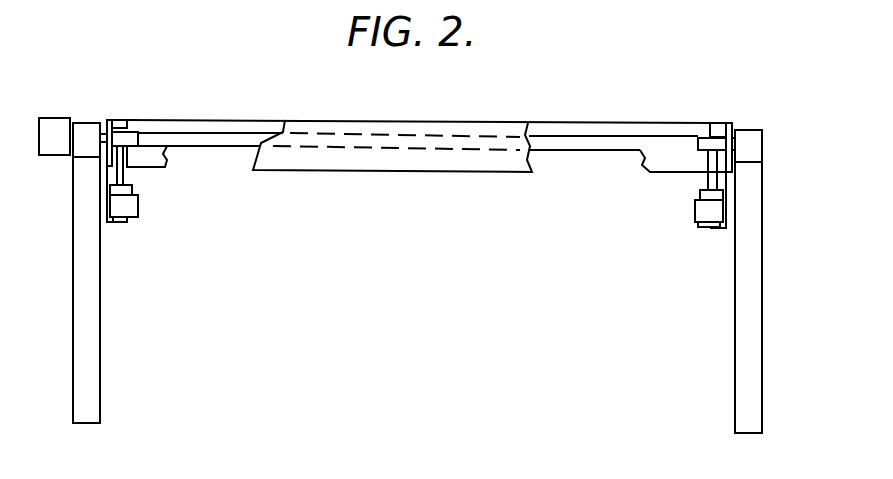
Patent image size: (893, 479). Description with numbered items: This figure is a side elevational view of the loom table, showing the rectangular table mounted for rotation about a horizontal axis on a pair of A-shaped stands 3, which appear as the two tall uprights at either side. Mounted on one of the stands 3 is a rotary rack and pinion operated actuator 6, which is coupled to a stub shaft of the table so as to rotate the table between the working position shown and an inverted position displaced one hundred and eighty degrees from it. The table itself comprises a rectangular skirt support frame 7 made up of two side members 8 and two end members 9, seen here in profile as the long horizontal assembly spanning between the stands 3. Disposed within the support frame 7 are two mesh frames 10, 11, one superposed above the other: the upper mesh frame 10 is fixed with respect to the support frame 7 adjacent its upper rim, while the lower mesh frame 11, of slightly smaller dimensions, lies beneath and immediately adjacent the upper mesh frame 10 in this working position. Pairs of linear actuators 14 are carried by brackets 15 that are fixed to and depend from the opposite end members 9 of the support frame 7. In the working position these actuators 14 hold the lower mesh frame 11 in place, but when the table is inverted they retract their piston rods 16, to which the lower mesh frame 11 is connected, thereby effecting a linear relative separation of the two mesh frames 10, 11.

The A-shaped stand 3 is at (97, 331).
The rotary rack and pinion operated actuator 6 is at (50, 122).
The skirt support frame 7 is at (394, 156).
The side member 8 is at (285, 160).
The end member 9 is at (733, 173).
The upper mesh frame 10 is at (572, 130).
The lower mesh frame 11 is at (548, 150).
The linear actuator 14 is at (138, 190).
The bracket 15 is at (108, 224).
The piston rod 16 is at (705, 182).